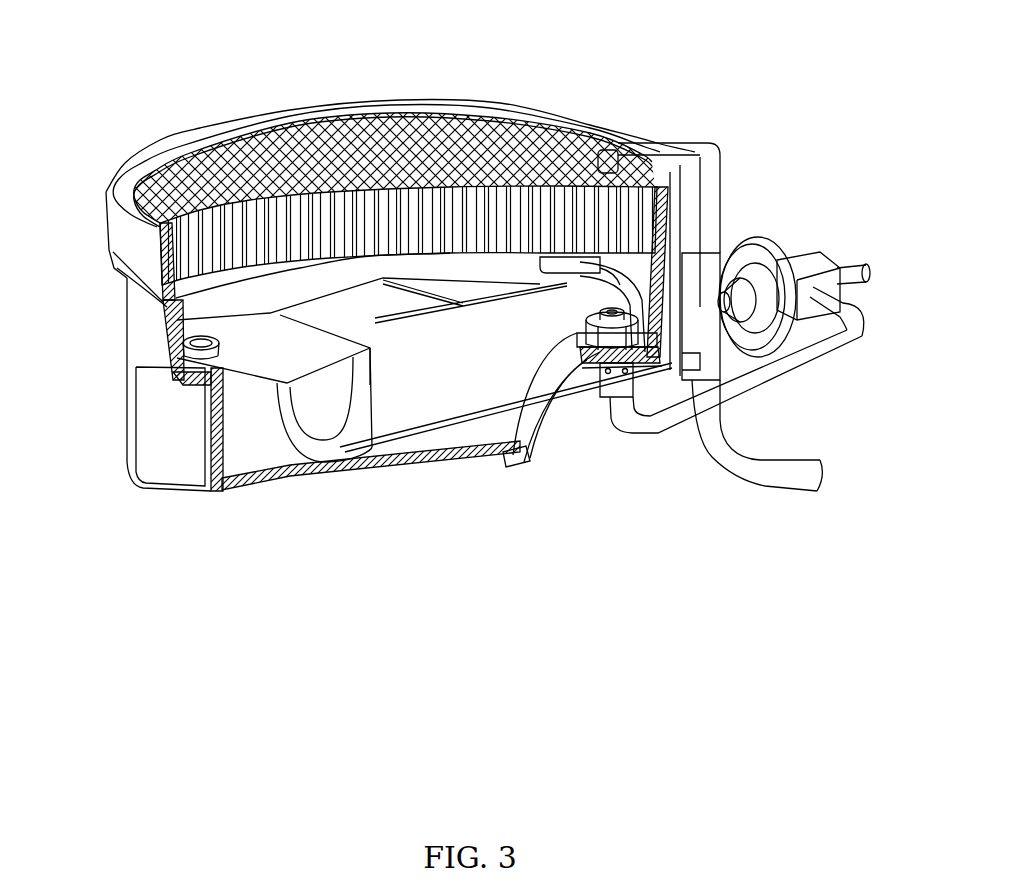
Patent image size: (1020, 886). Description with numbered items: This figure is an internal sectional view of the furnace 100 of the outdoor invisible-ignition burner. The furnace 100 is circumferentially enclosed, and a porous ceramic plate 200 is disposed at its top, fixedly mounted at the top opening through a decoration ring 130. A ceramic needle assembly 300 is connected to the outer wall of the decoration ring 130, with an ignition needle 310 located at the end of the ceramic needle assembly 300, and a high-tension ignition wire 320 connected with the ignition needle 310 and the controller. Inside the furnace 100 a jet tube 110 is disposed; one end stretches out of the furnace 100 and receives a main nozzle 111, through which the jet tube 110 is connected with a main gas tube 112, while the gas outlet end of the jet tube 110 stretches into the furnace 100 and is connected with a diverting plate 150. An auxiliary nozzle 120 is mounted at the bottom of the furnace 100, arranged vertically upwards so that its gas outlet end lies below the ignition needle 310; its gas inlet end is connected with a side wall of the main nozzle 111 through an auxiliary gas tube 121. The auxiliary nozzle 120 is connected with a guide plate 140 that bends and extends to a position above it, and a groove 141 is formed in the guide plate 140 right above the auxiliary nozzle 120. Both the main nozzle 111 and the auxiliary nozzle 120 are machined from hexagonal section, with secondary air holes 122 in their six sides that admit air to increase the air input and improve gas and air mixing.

The furnace 100 is at (158, 353).
The jet tube 110 is at (407, 414).
The main nozzle 111 is at (805, 262).
The main gas tube 112 is at (848, 277).
The auxiliary nozzle 120 is at (615, 378).
The auxiliary gas tube 121 is at (647, 440).
The secondary air holes 122 is at (577, 335).
The decoration ring 130 is at (108, 228).
The guide plate 140 is at (582, 280).
The groove 141 is at (645, 253).
The diverting plate 150 is at (253, 338).
The porous ceramic plate 200 is at (550, 127).
The ceramic needle assembly 300 is at (693, 154).
The ignition needle 310 is at (590, 130).
The high-tension ignition wire 320 is at (745, 470).